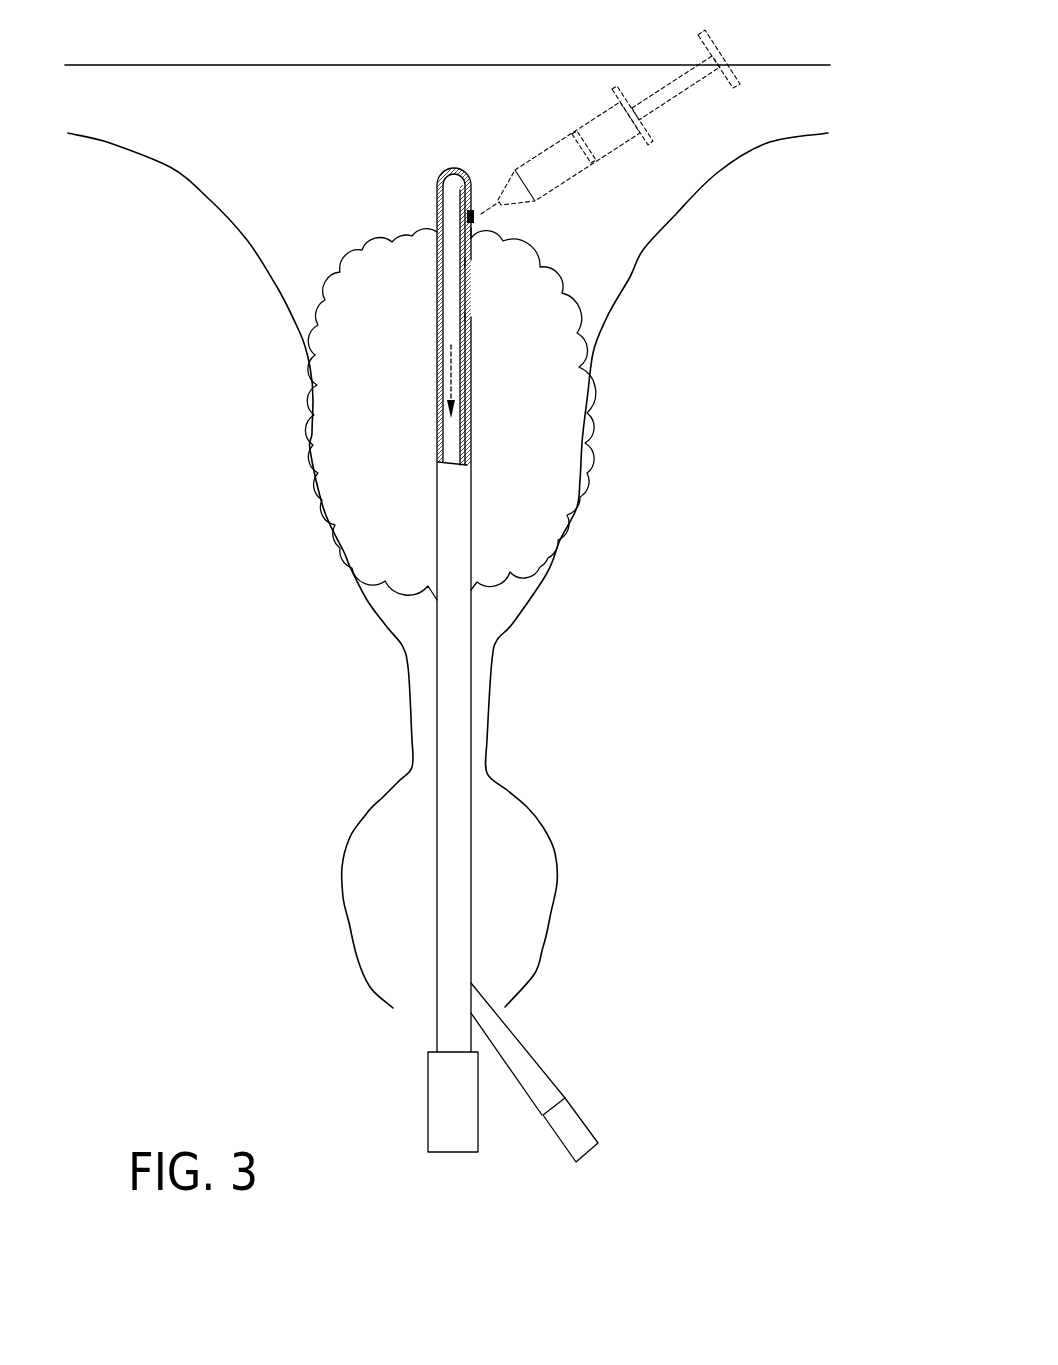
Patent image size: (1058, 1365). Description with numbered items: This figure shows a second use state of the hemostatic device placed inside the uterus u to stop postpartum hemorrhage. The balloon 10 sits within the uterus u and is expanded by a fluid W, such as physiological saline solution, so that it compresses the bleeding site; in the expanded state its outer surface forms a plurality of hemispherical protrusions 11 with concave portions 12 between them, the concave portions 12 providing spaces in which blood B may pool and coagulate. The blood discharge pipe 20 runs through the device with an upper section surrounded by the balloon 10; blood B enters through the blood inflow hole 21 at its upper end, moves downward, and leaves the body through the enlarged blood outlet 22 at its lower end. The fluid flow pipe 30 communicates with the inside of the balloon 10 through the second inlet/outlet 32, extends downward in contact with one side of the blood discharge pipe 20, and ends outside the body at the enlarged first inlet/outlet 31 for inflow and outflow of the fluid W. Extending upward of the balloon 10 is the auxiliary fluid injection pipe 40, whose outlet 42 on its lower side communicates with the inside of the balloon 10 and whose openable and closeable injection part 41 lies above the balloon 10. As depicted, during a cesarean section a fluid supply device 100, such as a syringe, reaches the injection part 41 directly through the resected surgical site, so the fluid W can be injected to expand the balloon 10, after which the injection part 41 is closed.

The fluid supply device 100 is at (600, 117).
The uterus u is at (607, 90).
The fluid W is at (740, 66).
The blood B is at (425, 200).
The balloon 10 is at (333, 393).
The protrusions 11 is at (318, 353).
The concave portions 12 is at (320, 334).
The blood discharge pipe 20 is at (437, 427).
The blood inflow hole 21 is at (437, 205).
The blood outlet 22 is at (445, 1152).
The fluid flow pipe 30 is at (519, 1054).
The first inlet/outlet 31 is at (597, 1148).
The second inlet/outlet 32 is at (465, 317).
The auxiliary fluid injection pipe 40 is at (471, 233).
The injection part 41 is at (475, 216).
The outlet 42 is at (465, 262).